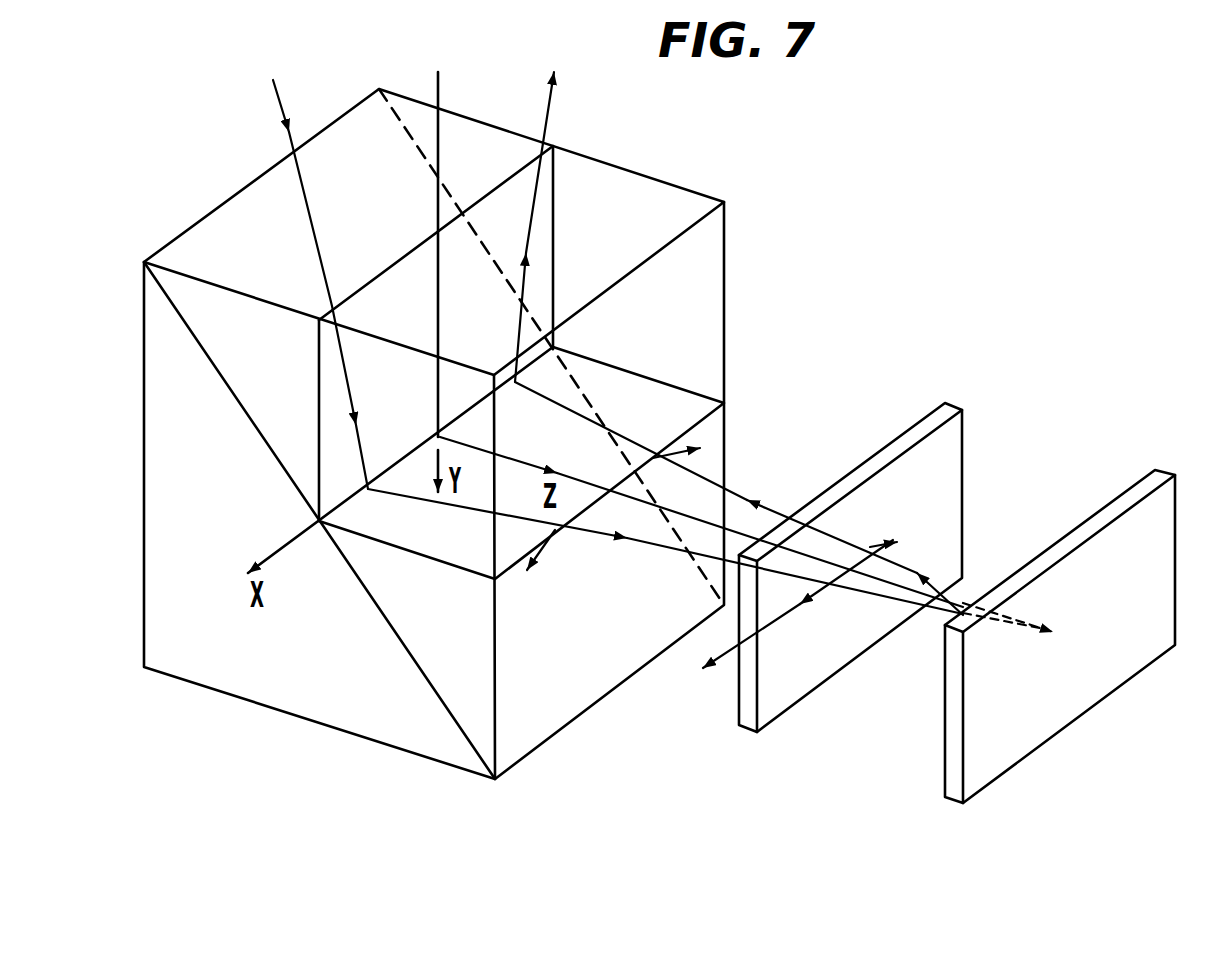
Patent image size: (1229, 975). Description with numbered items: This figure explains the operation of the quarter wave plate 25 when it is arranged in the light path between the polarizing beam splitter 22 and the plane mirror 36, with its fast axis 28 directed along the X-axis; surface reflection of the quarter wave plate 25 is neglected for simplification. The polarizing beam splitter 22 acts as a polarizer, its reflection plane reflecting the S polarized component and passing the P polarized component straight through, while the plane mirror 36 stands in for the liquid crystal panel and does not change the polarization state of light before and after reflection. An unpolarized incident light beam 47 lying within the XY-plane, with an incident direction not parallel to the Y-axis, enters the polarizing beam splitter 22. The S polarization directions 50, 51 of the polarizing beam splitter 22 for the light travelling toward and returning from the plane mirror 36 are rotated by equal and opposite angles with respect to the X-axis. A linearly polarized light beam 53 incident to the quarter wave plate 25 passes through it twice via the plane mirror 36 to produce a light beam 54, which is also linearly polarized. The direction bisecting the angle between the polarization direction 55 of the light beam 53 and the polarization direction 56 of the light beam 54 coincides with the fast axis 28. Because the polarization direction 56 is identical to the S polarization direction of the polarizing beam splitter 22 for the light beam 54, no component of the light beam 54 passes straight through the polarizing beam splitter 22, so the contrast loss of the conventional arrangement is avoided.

The polarizing beam splitter 22 is at (687, 198).
The quarter wave plate 25 is at (955, 402).
The plane mirror 36 is at (1157, 477).
The incident light beam 47 is at (277, 106).
The S polarization direction 50 is at (547, 547).
The S polarization direction 51 is at (700, 448).
The linearly polarized light beam 53 is at (603, 535).
The light beam 54 is at (768, 505).
The polarization direction 55 is at (812, 603).
The polarization direction 56 is at (897, 542).
The fast axis 28 is at (722, 662).